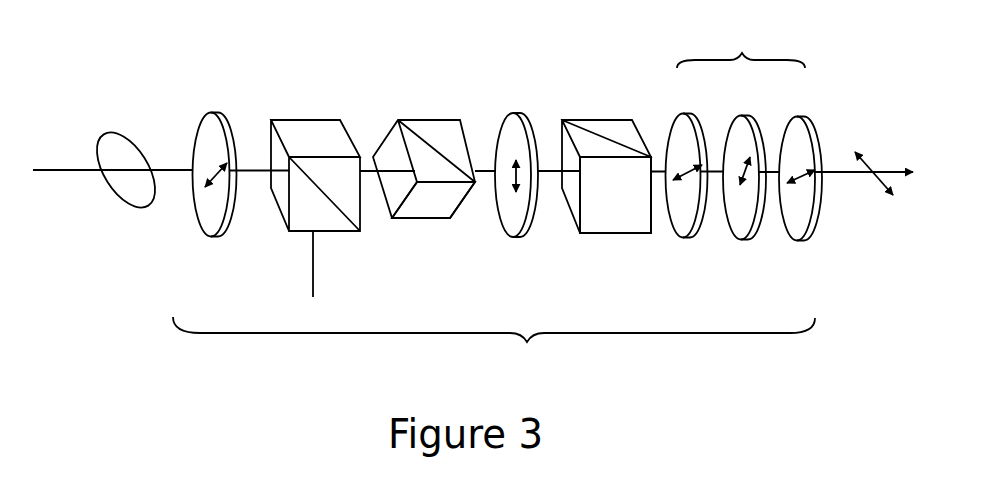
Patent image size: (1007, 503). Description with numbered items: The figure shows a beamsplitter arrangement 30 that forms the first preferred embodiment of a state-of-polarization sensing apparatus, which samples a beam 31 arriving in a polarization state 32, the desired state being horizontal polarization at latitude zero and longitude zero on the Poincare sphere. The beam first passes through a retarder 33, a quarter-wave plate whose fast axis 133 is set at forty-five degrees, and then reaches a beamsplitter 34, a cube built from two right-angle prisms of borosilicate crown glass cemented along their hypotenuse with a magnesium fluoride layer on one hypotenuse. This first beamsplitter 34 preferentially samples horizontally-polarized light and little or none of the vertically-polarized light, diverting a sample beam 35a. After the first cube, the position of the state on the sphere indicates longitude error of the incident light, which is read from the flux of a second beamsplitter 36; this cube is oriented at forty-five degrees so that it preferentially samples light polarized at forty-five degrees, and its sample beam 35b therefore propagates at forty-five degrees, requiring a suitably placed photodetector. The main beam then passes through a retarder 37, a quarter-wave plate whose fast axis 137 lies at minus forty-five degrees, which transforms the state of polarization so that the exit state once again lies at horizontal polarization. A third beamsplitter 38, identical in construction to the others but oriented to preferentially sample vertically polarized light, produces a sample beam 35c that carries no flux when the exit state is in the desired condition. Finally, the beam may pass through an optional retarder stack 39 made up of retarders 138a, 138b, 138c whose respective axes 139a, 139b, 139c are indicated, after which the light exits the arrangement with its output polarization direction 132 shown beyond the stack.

The beamsplitter arrangement 30 is at (494, 349).
The beam 31 is at (73, 172).
The polarization state 32 is at (130, 132).
The retarder 33 is at (224, 112).
The beamsplitter 34 is at (327, 120).
The sample beam 35a is at (313, 283).
The sample beam 35b is at (430, 202).
The sample beam 35c is at (612, 190).
The beamsplitter 36 is at (430, 120).
The retarder 37 is at (532, 112).
The beamsplitter 38 is at (618, 118).
The retarder stack 39 is at (741, 45).
The output polarization direction 132 is at (885, 192).
The fast axis 133 is at (203, 193).
The fast axis 137 is at (517, 193).
The retarder 138a is at (710, 103).
The retarder 138b is at (780, 102).
The retarder 138c is at (838, 103).
The axis 139a is at (675, 185).
The axis 139b is at (737, 190).
The axis 139c is at (788, 190).